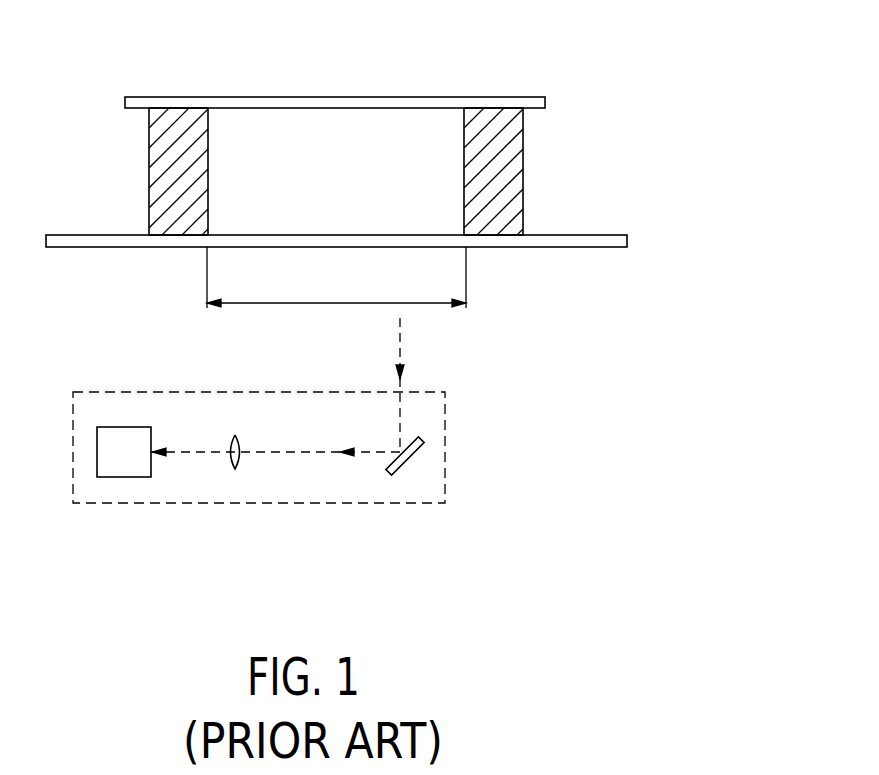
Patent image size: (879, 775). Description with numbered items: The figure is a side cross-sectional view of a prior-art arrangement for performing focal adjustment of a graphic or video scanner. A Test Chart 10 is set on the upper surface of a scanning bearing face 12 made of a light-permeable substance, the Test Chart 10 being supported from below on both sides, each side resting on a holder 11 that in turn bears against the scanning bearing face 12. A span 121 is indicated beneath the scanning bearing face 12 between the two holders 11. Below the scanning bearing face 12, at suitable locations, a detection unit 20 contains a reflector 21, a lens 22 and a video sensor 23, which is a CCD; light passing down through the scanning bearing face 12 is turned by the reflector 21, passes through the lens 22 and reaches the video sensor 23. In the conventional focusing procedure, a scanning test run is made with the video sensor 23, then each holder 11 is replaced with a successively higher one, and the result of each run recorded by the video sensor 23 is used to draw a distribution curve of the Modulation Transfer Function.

The Test Chart 10 is at (485, 97).
The holder 11 is at (165, 175).
The scanning bearing face 12 is at (586, 243).
The measurement region 121 is at (207, 303).
The optical detection unit 20 is at (432, 405).
The reflector 21 is at (412, 452).
The lens 22 is at (237, 468).
The video sensor 23 is at (128, 478).